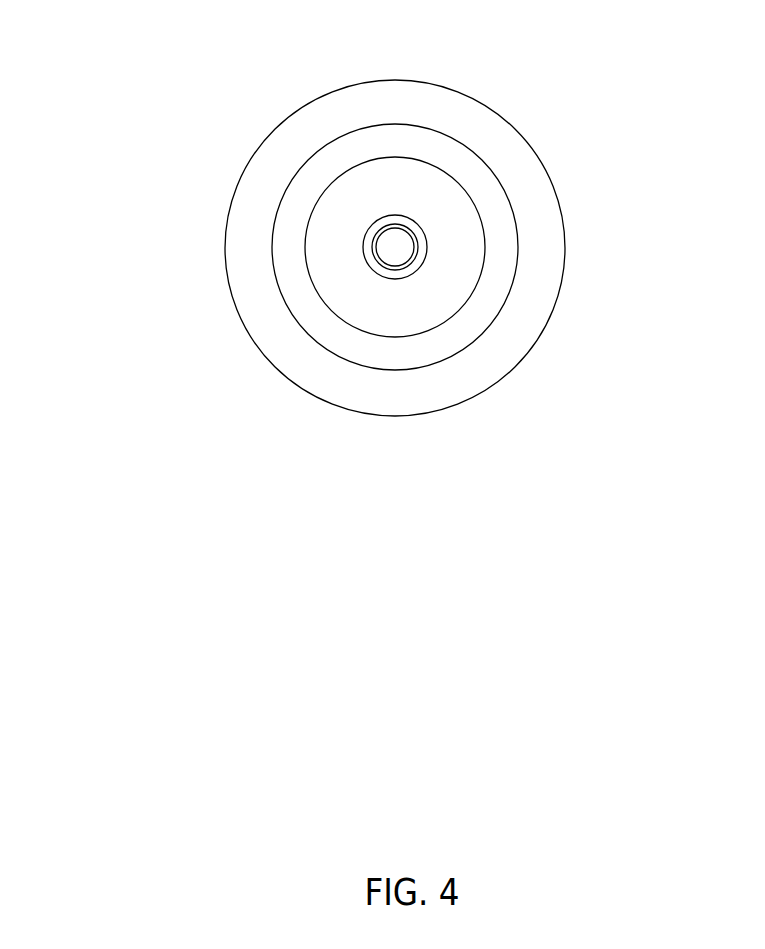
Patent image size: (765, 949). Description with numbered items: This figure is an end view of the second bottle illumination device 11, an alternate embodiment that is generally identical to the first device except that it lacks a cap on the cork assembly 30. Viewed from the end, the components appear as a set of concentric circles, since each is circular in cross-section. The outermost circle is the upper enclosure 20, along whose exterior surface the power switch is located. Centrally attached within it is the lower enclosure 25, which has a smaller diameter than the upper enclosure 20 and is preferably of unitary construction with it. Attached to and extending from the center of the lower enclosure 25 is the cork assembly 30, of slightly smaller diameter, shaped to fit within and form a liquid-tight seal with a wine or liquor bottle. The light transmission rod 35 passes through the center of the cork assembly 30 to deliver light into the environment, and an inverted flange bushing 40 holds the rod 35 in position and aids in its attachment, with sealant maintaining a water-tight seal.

The second bottle illumination device 11 is at (237, 510).
The upper enclosure 20 is at (375, 80).
The lower enclosure 25 is at (415, 124).
The cork assembly 30 is at (435, 167).
The light transmission rod 35 is at (422, 240).
The inverted flange bushing 40 is at (415, 226).